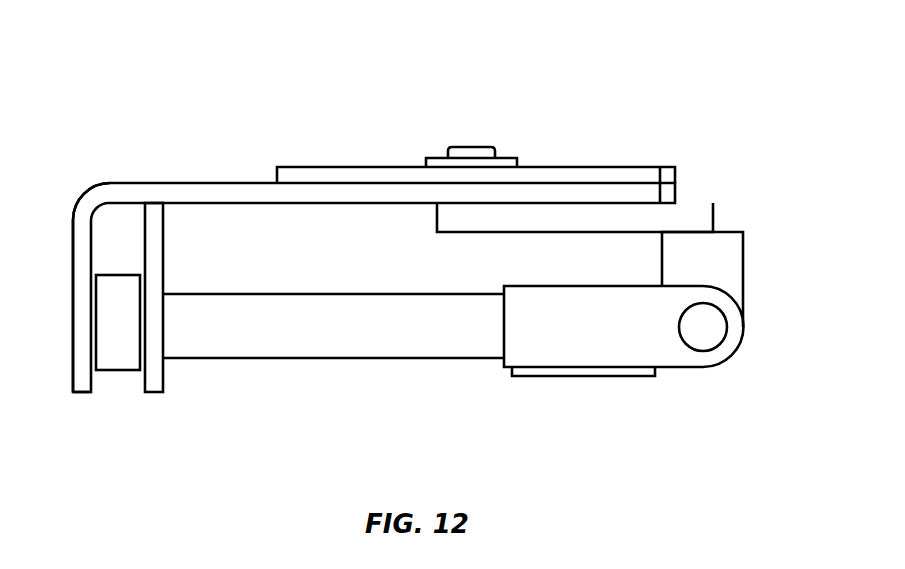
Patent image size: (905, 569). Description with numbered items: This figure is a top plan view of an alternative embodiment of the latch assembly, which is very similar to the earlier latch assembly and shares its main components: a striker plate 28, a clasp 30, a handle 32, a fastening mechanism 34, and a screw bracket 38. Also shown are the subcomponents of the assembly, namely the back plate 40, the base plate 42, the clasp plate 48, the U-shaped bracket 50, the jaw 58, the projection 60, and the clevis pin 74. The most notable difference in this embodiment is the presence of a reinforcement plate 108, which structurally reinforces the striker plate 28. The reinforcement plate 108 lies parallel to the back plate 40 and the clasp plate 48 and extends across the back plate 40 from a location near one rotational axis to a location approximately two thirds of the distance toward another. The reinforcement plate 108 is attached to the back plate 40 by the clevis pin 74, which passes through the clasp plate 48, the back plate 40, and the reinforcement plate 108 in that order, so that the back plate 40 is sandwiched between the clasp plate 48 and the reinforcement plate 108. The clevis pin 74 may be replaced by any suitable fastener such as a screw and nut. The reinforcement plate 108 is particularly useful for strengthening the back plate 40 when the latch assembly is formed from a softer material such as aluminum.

The striker plate 28 is at (240, 107).
The clasp 30 is at (765, 212).
The handle 32 is at (463, 407).
The fastening mechanism 34 is at (118, 360).
The screw bracket 38 is at (113, 229).
The back plate 40 is at (197, 192).
The base plate 42 is at (83, 295).
The clasp plate 48 is at (482, 218).
The U-shaped bracket 50 is at (730, 257).
The jaw 58 is at (603, 356).
The projection 60 is at (310, 347).
The clevis pin 74 is at (473, 148).
The reinforcement plate 108 is at (597, 177).